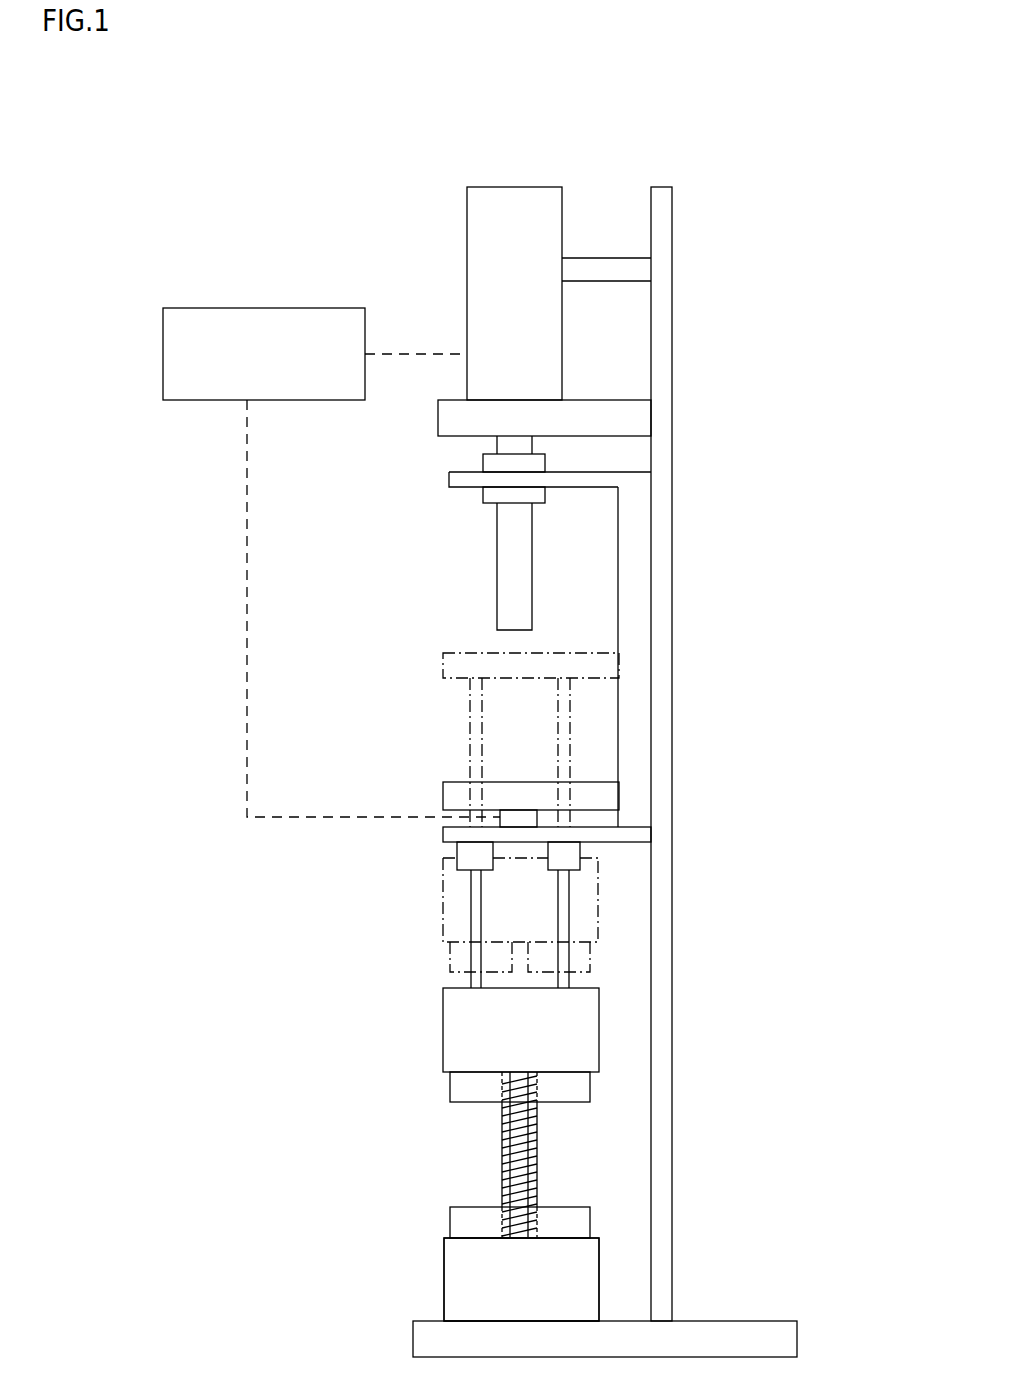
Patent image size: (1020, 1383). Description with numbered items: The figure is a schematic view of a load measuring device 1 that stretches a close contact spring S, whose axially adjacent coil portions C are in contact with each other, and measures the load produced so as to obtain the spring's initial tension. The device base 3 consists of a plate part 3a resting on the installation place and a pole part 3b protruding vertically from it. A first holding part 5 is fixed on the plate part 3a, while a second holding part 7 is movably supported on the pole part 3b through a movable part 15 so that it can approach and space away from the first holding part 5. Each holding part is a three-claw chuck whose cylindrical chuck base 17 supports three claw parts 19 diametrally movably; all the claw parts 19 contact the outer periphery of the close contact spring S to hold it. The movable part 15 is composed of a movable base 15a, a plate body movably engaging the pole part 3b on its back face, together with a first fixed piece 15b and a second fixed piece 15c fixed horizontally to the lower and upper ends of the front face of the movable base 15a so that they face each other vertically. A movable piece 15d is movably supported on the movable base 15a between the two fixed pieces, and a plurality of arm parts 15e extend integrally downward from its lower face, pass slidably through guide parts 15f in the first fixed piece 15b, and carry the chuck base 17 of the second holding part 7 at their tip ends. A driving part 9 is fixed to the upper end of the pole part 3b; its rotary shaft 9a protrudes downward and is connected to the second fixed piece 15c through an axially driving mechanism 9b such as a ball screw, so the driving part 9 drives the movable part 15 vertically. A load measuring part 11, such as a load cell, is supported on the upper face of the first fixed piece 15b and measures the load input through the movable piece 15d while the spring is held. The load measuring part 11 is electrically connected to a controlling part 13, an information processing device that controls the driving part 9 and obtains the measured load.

The load measuring device 1 is at (721, 137).
The device base 3 is at (697, 1318).
The plate part 3a is at (780, 1343).
The pole part 3b is at (664, 1237).
The first holding part 5 is at (450, 1262).
The second holding part 7 is at (446, 1043).
The driving part 9 is at (509, 187).
The rotary shaft 9a is at (513, 570).
The axially driving mechanism 9b is at (487, 467).
The load measuring part 11 is at (538, 812).
The controlling part 13 is at (163, 360).
The movable part 15 is at (648, 597).
The movable base 15a is at (638, 662).
The first fixed piece 15b is at (612, 838).
The second fixed piece 15c is at (609, 478).
The movable piece 15d is at (458, 796).
The arm parts 15e is at (473, 925).
The guide parts 15f is at (468, 858).
The chuck base 17 is at (463, 1003).
The claw parts 19 is at (462, 1082).
The close contact spring S is at (500, 1133).
The coil portions C is at (502, 1177).